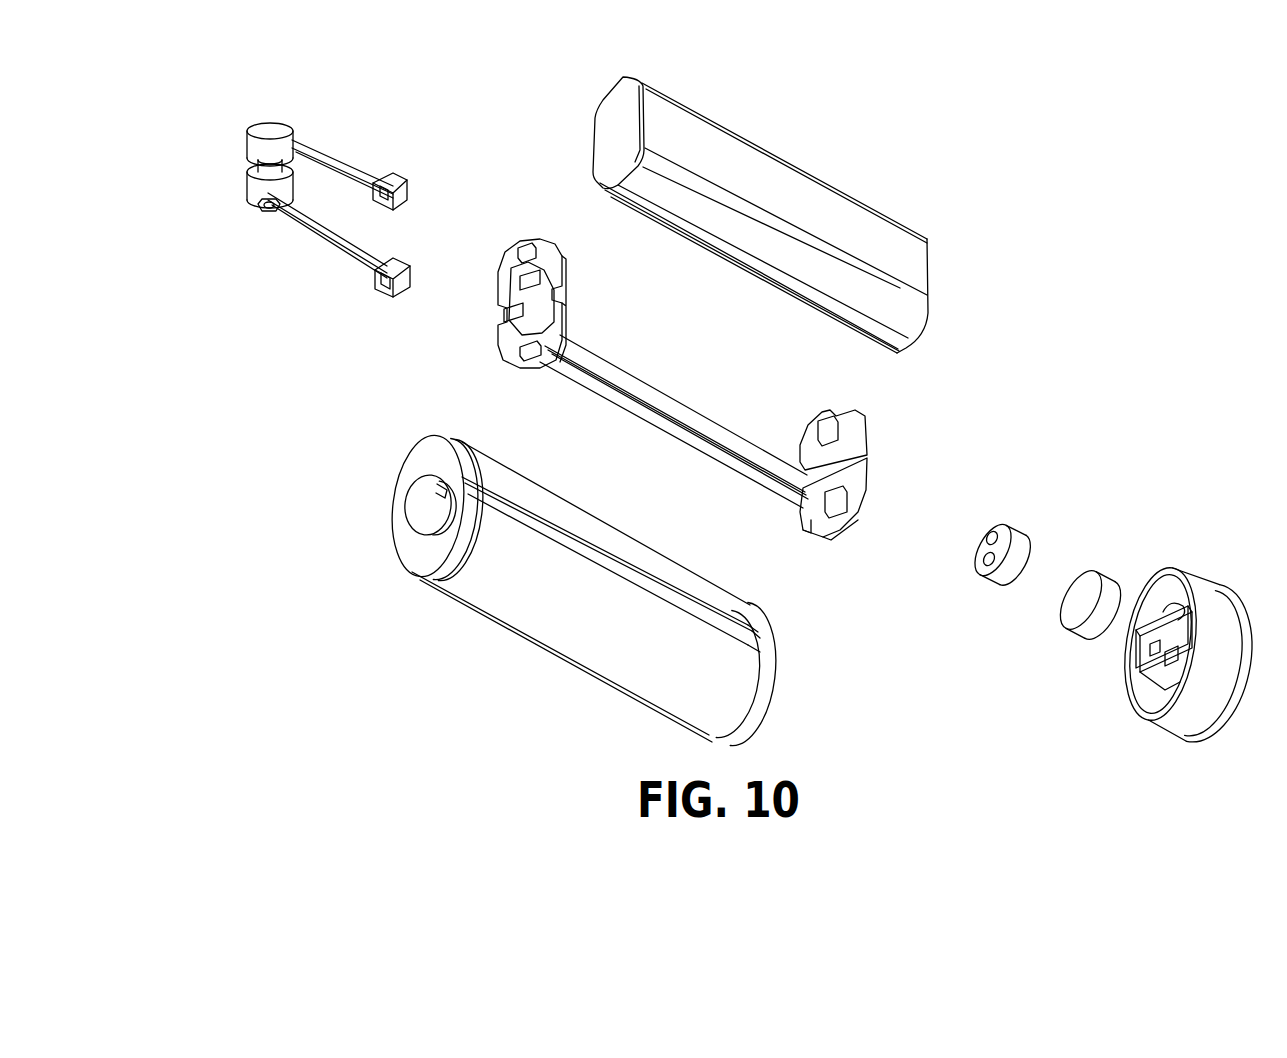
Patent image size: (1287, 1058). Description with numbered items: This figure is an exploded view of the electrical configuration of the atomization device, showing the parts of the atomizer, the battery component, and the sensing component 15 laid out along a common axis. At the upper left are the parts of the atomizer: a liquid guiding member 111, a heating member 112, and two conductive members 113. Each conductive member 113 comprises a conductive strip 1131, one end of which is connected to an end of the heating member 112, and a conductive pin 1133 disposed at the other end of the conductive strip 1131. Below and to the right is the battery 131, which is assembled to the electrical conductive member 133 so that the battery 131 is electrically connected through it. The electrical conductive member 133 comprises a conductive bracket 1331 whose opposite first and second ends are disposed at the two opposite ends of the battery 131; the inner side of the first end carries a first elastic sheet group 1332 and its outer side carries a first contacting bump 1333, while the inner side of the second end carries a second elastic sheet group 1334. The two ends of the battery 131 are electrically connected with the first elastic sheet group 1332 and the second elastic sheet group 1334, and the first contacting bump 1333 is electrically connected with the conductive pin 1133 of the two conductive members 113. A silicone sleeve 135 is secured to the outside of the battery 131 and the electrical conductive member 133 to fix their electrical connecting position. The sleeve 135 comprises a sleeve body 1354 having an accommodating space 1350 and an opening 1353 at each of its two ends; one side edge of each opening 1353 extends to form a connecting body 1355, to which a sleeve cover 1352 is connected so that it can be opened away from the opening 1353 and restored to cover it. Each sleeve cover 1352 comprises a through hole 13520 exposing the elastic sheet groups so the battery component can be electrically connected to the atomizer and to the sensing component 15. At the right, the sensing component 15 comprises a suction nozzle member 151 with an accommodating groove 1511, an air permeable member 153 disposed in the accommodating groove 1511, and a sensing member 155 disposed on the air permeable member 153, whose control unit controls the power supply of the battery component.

The conductive member 113 is at (412, 108).
The liquid guiding member 111 is at (257, 180).
The heating member 112 is at (270, 213).
The conductive strip 1131 is at (320, 232).
The conductive pin 1133 is at (405, 280).
The battery 131 is at (817, 210).
The electrical conductive member 133 is at (483, 373).
The conductive bracket 1331 is at (683, 430).
The first elastic sheet group 1332 is at (538, 282).
The first contacting bump 1333 is at (515, 258).
The second elastic sheet group 1334 is at (826, 500).
The sleeve 135 is at (500, 692).
The accommodating space 1350 is at (428, 507).
The through hole 13520 is at (418, 478).
The sleeve cover 1352 is at (428, 545).
The opening 1353 is at (452, 582).
The sleeve body 1354 is at (605, 637).
The connecting body 1355 is at (418, 580).
The sensing component 15 is at (1057, 465).
The suction nozzle member 151 is at (1205, 610).
The accommodating groove 1511 is at (1137, 669).
The air permeable member 153 is at (1085, 590).
The sensing member 155 is at (1022, 548).